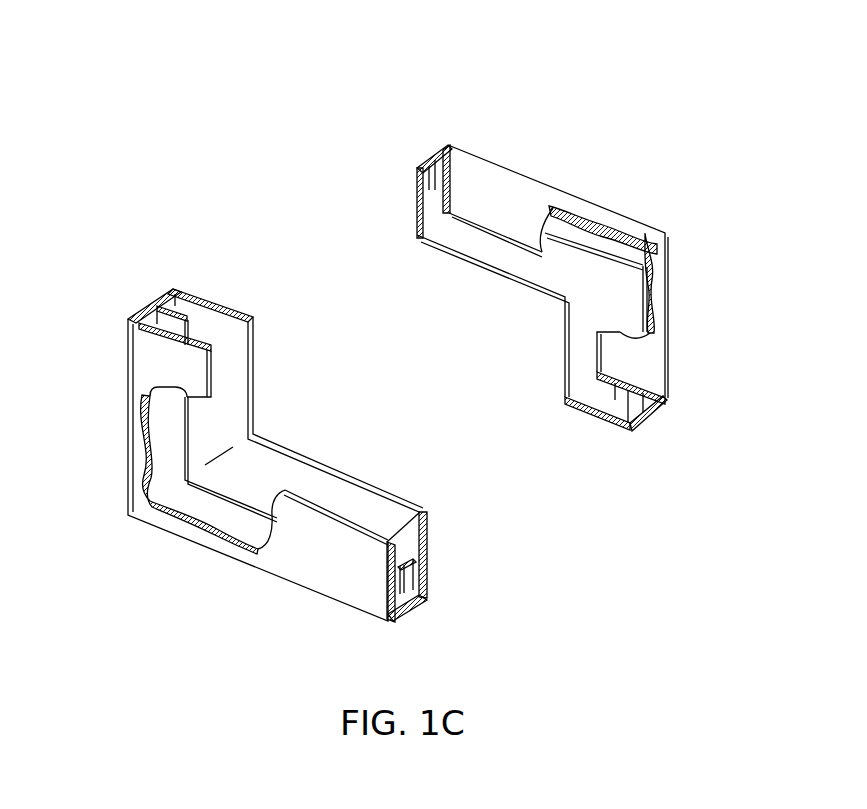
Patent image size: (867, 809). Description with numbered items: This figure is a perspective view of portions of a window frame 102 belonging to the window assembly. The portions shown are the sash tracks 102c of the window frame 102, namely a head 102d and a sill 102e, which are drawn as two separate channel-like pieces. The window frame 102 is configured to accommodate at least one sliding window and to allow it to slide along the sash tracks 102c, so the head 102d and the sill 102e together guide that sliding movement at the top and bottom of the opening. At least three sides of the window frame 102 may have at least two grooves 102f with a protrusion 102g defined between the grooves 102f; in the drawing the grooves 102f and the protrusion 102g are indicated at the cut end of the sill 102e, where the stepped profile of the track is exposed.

The window frame 102 is at (614, 67).
The sash tracks 102c is at (507, 294).
The head 102d is at (515, 184).
The sill 102e is at (300, 577).
The grooves 102f is at (167, 293).
The protrusion 102g is at (184, 311).